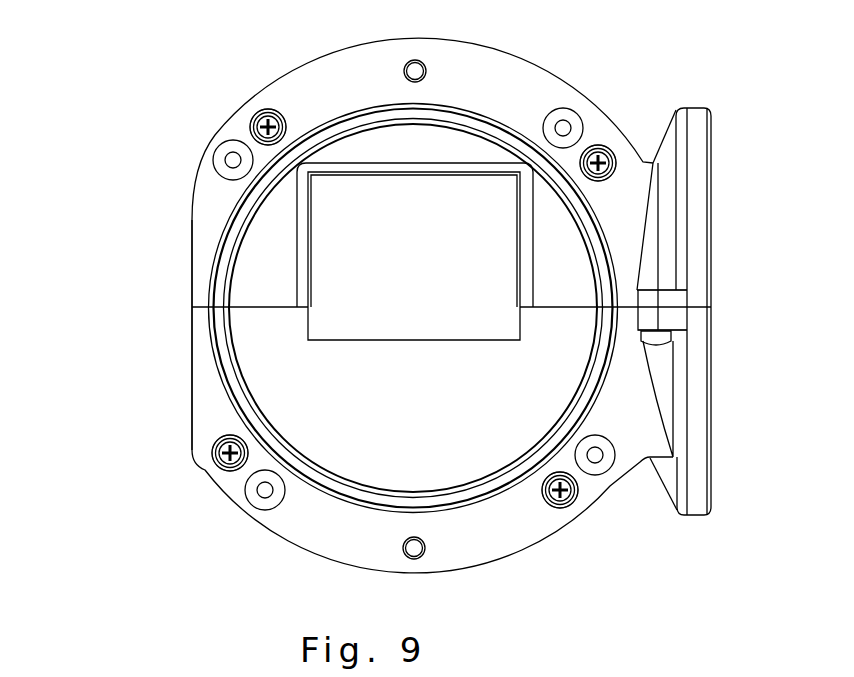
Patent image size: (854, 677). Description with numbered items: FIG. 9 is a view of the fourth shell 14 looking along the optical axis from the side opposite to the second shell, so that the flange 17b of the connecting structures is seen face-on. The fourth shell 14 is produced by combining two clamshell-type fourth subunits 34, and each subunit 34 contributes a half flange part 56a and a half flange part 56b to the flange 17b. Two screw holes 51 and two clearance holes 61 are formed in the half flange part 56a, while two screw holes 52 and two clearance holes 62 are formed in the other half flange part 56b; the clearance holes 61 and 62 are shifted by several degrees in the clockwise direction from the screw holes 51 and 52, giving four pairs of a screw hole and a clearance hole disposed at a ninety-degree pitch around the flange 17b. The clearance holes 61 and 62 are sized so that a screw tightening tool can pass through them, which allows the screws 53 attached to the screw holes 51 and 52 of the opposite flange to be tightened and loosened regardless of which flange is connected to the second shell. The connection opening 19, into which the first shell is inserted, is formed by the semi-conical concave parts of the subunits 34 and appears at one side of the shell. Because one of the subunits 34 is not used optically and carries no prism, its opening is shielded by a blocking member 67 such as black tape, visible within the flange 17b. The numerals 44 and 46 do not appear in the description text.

The fourth shell 14 is at (793, 260).
The flange 17b is at (80, 255).
The connection opening 19 is at (712, 196).
The fourth subunit 34 is at (633, 257).
The flange housing 44 is at (186, 455).
The annular wall 46 is at (231, 381).
The screw hole 51 is at (262, 508).
The screw hole 52 is at (226, 152).
The screw 53 is at (279, 114).
The half flange part 56a is at (192, 348).
The half flange part 56b is at (192, 253).
The clearance hole 61 is at (221, 436).
The clearance hole 62 is at (272, 113).
The blocking member 67 is at (473, 190).